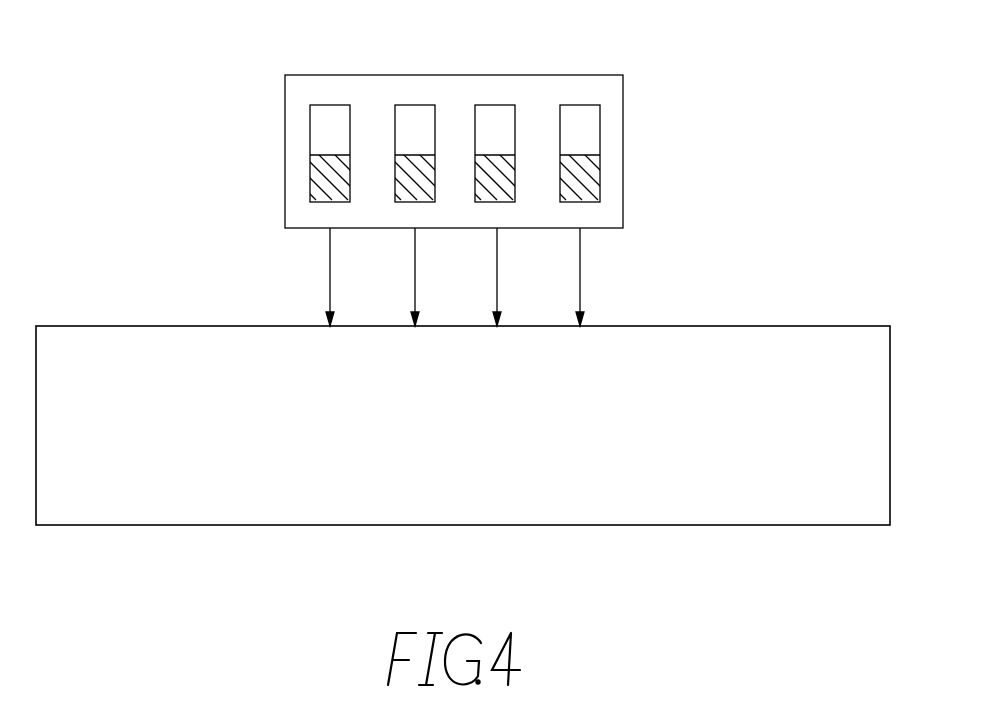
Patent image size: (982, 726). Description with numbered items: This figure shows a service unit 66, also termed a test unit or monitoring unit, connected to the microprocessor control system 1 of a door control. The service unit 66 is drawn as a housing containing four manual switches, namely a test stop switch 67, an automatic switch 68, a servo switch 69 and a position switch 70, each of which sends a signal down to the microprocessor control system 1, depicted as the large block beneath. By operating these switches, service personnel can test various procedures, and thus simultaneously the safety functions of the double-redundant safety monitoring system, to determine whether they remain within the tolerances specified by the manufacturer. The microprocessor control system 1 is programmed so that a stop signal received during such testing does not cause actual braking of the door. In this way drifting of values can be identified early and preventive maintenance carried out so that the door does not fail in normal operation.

The microprocessor control system 1 is at (170, 326).
The service unit 66 is at (625, 182).
The test stop switch 67 is at (575, 105).
The automatic switch 68 is at (490, 105).
The servo switch 69 is at (410, 105).
The position switch 70 is at (325, 105).